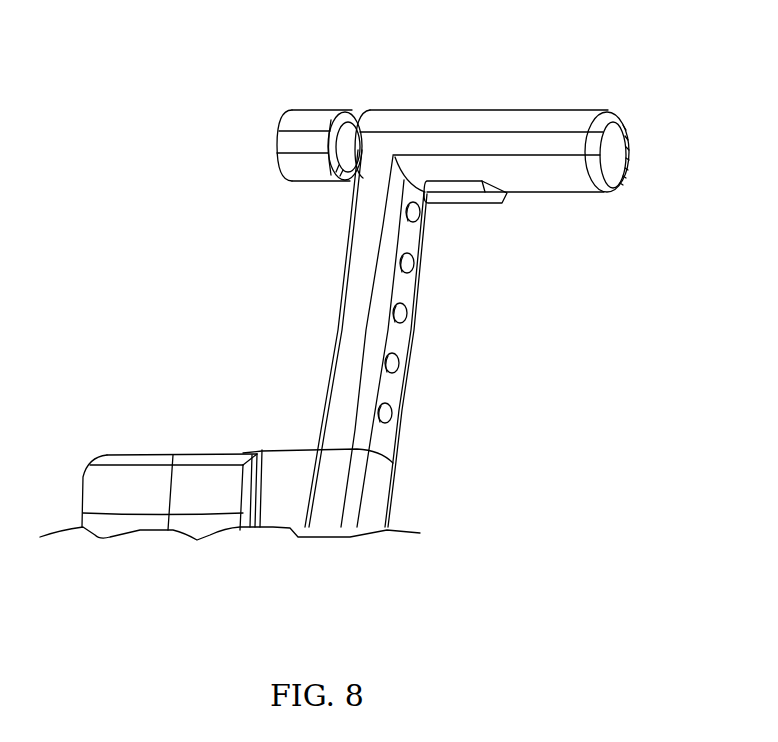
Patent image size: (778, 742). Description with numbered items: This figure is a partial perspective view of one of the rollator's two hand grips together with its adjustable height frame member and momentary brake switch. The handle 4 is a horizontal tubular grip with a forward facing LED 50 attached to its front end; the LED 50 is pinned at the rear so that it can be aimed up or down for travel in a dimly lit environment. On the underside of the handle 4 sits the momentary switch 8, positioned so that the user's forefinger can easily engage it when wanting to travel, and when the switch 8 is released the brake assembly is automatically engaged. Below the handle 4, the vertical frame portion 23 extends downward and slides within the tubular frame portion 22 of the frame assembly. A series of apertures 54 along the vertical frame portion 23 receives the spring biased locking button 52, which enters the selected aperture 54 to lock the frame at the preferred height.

The handle 4 is at (528, 110).
The momentary switch 8 is at (487, 208).
The tubular frame portion 22 is at (372, 517).
The vertical frame portion 23 is at (290, 410).
The LED light 50 is at (320, 110).
The spring biased locking button 52 is at (391, 412).
The aperture 54 is at (418, 219).